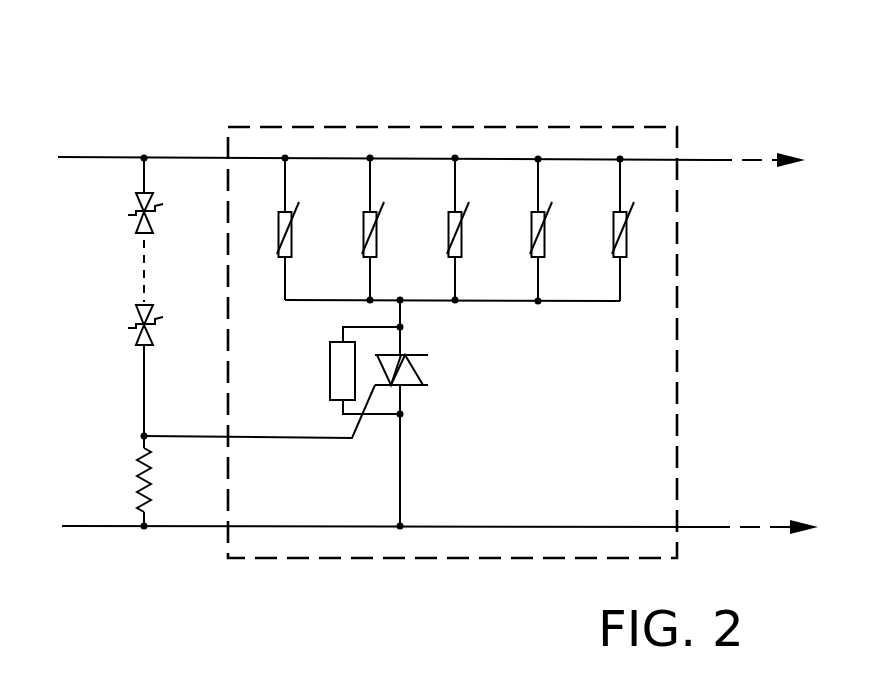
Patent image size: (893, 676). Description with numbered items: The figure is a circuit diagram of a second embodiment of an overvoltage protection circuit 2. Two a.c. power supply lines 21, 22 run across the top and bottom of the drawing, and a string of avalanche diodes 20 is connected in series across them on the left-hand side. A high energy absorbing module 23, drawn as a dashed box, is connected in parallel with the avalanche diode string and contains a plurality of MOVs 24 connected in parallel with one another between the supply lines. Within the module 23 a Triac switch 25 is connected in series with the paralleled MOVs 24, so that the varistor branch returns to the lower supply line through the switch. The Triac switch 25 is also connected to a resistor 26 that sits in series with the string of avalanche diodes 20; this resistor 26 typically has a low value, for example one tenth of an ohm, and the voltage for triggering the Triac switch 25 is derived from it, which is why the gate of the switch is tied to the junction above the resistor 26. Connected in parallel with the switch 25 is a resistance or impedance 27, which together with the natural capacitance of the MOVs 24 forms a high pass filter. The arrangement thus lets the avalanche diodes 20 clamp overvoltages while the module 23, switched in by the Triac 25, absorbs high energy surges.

The overvoltage protection circuit 2 is at (154, 130).
The avalanche diodes 20 is at (128, 215).
The a.c. power supply line 21 is at (695, 157).
The a.c. power supply line 22 is at (694, 526).
The high energy absorbing module 23 is at (233, 115).
The MOVs 24 is at (278, 231).
The Triac switch 25 is at (420, 368).
The resistor 26 is at (135, 475).
The resistance or impedance 27 is at (328, 380).